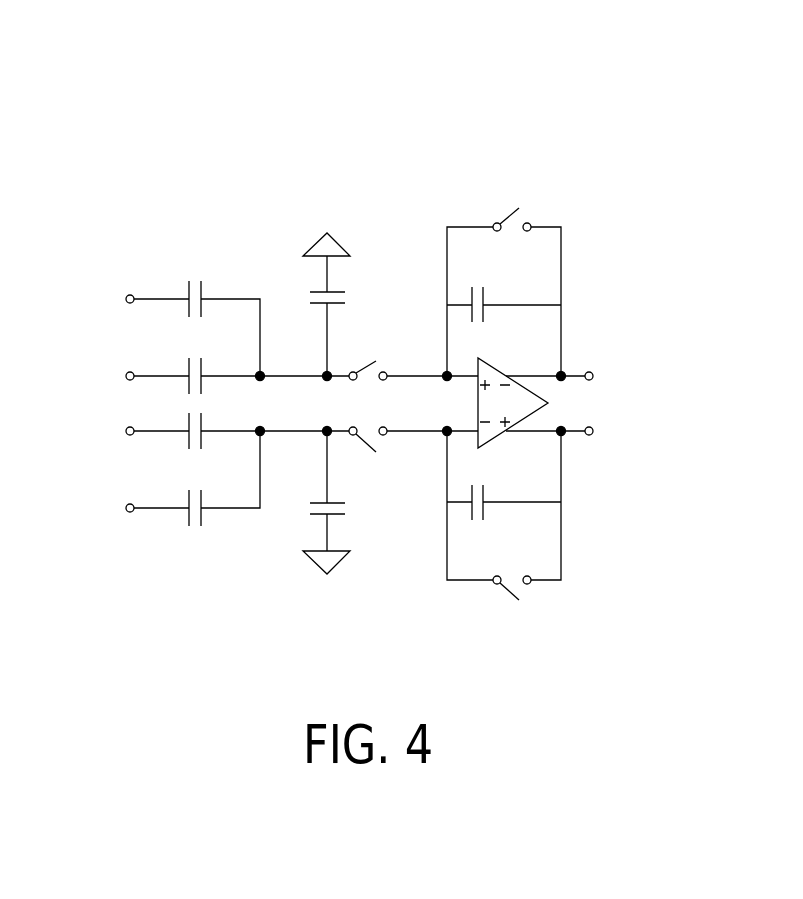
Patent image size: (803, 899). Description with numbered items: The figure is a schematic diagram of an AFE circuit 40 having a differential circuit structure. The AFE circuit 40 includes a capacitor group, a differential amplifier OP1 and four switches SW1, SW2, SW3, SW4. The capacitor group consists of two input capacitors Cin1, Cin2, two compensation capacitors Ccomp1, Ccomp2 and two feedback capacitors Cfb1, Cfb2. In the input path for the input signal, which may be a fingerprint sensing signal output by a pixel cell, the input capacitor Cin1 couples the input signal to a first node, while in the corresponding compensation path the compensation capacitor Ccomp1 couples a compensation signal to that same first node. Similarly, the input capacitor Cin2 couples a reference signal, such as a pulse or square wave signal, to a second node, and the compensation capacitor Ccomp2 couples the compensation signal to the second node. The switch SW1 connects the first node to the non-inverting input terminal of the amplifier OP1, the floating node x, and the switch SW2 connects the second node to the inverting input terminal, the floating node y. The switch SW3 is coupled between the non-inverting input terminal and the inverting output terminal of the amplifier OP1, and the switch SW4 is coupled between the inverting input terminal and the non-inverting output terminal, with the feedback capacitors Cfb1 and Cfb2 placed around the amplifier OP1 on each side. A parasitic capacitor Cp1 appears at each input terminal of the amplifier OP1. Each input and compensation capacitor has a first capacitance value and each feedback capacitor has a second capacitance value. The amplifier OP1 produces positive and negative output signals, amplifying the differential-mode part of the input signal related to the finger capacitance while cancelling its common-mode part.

The AFE circuit 40 is at (612, 92).
The amplifier OP1 is at (520, 402).
The switch SW1 is at (391, 358).
The switch SW2 is at (391, 451).
The switch SW3 is at (533, 208).
The switch SW4 is at (533, 603).
The parasitic capacitor Cp1 is at (345, 403).
The feedback capacitor Cfb1 is at (504, 301).
The feedback capacitor Cfb2 is at (504, 505).
The input capacitor Cin1 is at (190, 351).
The input capacitor Cin2 is at (191, 448).
The compensation capacitor Ccomp1 is at (191, 277).
The compensation capacitor Ccomp2 is at (191, 522).